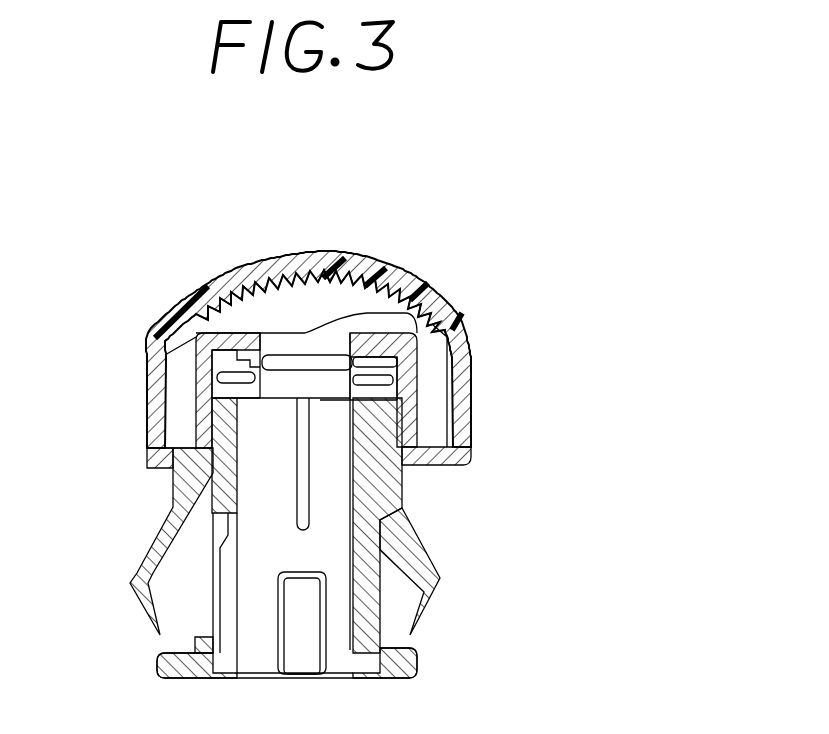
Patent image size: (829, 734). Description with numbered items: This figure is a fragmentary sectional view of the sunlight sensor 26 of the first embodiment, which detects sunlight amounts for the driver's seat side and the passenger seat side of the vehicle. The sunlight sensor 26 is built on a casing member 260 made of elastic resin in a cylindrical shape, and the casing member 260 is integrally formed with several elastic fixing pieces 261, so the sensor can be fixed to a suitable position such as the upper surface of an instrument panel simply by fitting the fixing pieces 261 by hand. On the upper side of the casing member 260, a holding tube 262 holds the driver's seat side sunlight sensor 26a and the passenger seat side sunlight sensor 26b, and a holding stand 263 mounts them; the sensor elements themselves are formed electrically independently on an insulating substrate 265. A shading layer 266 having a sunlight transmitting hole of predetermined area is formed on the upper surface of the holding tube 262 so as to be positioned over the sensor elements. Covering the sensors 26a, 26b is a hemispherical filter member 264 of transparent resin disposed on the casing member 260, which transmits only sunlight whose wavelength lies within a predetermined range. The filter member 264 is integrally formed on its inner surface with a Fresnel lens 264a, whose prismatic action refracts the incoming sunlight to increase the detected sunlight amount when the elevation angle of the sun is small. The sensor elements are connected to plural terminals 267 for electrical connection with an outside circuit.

The sunlight sensor 26 is at (348, 301).
The filter member 264 is at (430, 287).
The Fresnel lens 264a is at (231, 300).
The holding tube 262 is at (158, 302).
The shading layer 266 is at (215, 285).
The insulating substrate 265 is at (290, 333).
The driver's seat side sunlight sensor 26a is at (447, 337).
The passenger seat side sunlight sensor 26b is at (475, 312).
The casing member 260 is at (383, 617).
The holding stand 263 is at (280, 395).
The terminals 267 is at (148, 333).
The elastic fixing pieces 261 is at (137, 575).